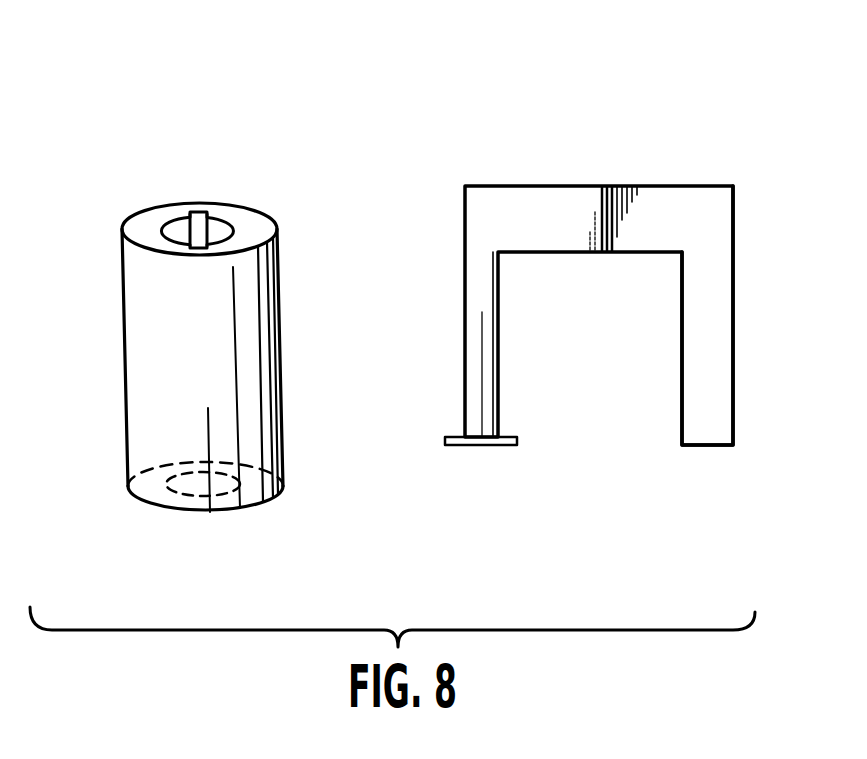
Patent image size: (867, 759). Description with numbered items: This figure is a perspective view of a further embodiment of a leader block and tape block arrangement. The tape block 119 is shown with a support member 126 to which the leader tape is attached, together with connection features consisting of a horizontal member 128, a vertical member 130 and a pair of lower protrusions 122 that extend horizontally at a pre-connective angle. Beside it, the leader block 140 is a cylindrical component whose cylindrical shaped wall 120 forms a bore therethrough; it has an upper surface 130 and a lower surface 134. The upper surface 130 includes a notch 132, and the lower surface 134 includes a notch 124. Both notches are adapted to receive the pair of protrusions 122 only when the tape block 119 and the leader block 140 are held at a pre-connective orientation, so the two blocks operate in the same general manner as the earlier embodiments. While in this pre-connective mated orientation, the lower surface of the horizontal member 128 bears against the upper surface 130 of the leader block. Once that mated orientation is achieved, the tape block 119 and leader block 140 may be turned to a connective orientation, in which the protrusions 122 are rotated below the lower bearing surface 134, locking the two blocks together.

The leader block 140 is at (343, 107).
The tape block 119 is at (747, 108).
The cylindrical shaped wall 120 is at (182, 223).
The upper surface 130 is at (140, 223).
The notch 132 is at (233, 226).
The notch 124 is at (182, 518).
The lower surface 134 is at (230, 512).
The support member 126 is at (733, 333).
The horizontal member 128 is at (580, 252).
The lower protrusions 122 is at (453, 447).